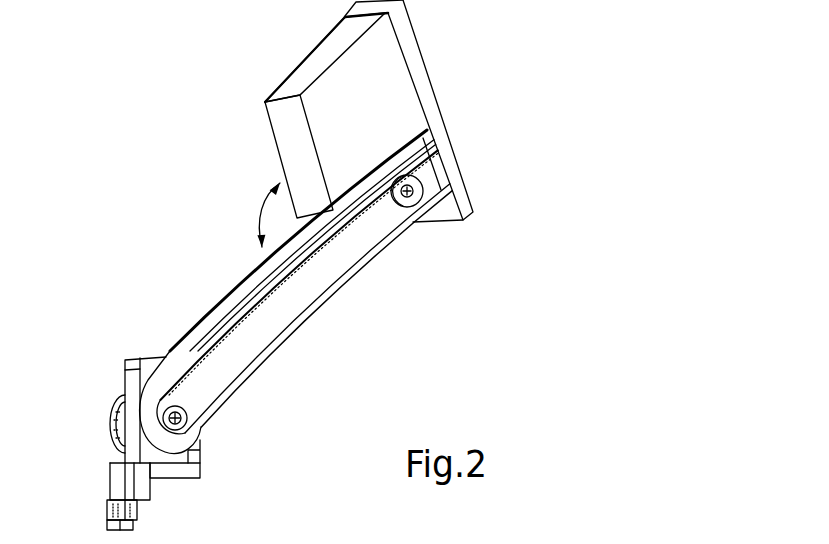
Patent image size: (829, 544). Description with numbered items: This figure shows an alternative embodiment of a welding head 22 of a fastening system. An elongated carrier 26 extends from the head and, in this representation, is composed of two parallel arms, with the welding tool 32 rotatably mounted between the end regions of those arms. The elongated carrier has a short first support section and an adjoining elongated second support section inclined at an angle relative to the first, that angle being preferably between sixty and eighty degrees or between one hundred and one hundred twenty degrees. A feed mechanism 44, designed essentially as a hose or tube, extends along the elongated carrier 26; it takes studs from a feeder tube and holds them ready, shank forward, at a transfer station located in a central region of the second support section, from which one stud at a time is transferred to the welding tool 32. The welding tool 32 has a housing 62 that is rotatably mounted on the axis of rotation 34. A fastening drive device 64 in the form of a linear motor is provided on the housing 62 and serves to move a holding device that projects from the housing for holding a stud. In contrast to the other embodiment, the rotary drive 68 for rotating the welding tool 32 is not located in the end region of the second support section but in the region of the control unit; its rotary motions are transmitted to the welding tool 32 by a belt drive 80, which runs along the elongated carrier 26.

The welding head 22 is at (535, 96).
The elongated carrier 26 is at (255, 282).
The welding tool 32 is at (190, 491).
The axis of rotation 34 is at (192, 419).
The feed mechanism 44 is at (388, 245).
The housing 62 is at (355, 73).
The fastening drive device (linear motor) 64 is at (138, 420).
The rotary drive 68 is at (440, 162).
The belt drive 80 is at (296, 318).